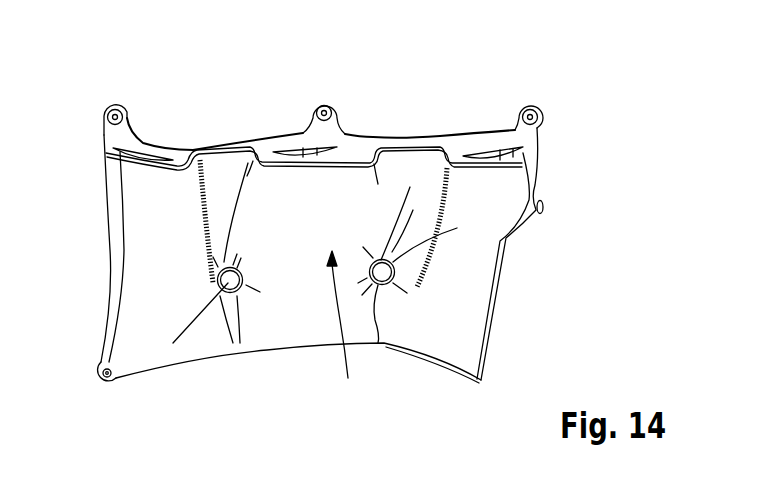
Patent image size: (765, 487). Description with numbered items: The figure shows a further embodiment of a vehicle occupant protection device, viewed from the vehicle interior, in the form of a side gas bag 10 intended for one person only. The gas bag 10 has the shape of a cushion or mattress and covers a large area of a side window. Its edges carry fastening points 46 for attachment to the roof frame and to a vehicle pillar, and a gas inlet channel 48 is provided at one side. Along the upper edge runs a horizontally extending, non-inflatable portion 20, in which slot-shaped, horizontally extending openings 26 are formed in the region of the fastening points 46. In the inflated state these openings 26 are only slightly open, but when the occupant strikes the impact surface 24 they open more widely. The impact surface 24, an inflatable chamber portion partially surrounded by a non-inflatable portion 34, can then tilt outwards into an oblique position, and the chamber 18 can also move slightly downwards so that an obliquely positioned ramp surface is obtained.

The side gas bag 10 is at (470, 293).
The chamber 18 is at (287, 327).
The non-inflatable portion 20 is at (457, 147).
The impact surface 24 is at (343, 331).
The slot-shaped openings 26 is at (148, 152).
The non-inflatable portion 34 is at (232, 345).
The fastening points 46 is at (116, 108).
The gas inlet channel 48 is at (546, 207).